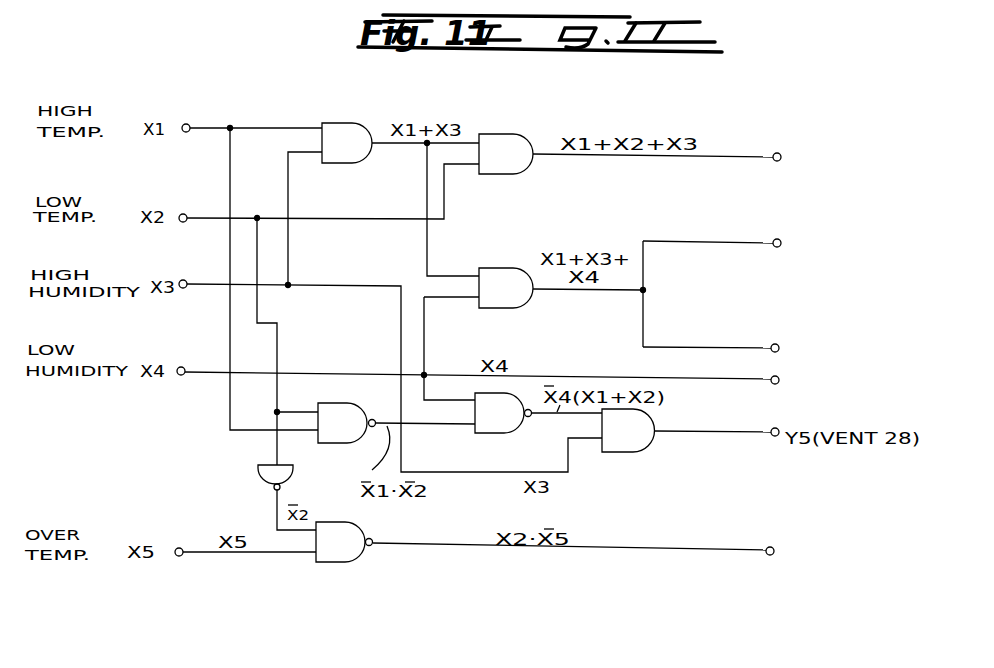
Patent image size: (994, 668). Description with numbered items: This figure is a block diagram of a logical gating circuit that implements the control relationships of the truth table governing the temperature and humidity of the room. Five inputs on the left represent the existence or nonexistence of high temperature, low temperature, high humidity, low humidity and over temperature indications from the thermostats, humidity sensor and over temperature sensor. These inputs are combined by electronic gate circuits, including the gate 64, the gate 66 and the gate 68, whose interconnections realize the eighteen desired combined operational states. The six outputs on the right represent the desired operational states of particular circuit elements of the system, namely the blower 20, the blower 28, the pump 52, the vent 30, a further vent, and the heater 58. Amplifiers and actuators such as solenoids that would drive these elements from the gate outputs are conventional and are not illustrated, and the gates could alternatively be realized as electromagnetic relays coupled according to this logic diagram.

The AND gate 64 is at (351, 127).
The NAND gate 66 is at (485, 429).
The inverter 68 is at (258, 472).
The blower 20 is at (731, 171).
The blower 28 is at (786, 259).
The pump 52 is at (789, 353).
The vent 30 is at (849, 385).
The heater 58 is at (655, 565).